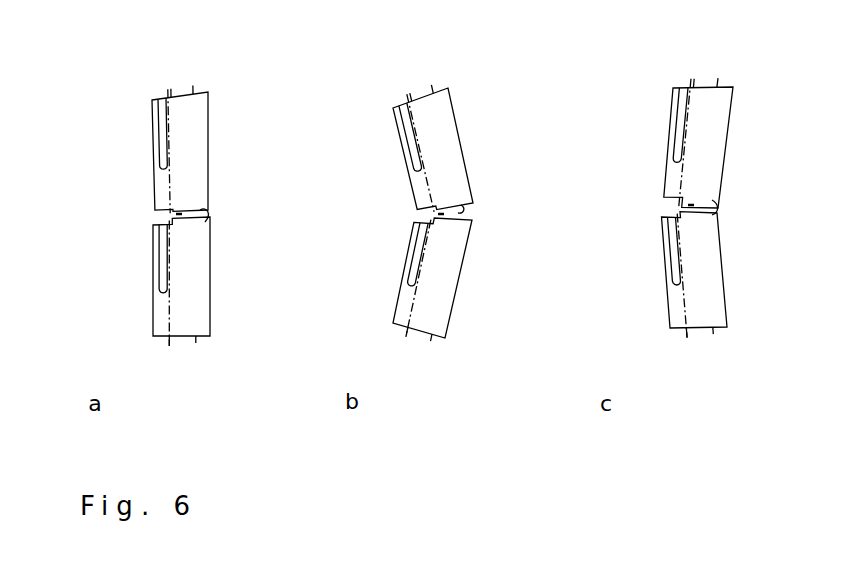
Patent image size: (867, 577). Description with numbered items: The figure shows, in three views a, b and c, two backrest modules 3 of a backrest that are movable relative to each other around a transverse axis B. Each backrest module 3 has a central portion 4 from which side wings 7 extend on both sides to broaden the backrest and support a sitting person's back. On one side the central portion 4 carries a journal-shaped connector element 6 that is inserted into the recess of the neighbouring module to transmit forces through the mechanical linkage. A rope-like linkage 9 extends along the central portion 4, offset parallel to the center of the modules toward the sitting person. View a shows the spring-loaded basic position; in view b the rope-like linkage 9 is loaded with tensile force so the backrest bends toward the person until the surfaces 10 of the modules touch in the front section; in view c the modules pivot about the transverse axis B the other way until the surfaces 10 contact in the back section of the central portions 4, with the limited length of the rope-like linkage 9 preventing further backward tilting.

The backrest module 3 is at (217, 128).
The central portion 4 is at (188, 112).
The connector element 6 is at (178, 216).
The side wings 7 is at (160, 128).
The rope-like linkage 9 is at (168, 188).
The surfaces 10 is at (200, 213).
The transverse axis B is at (184, 216).